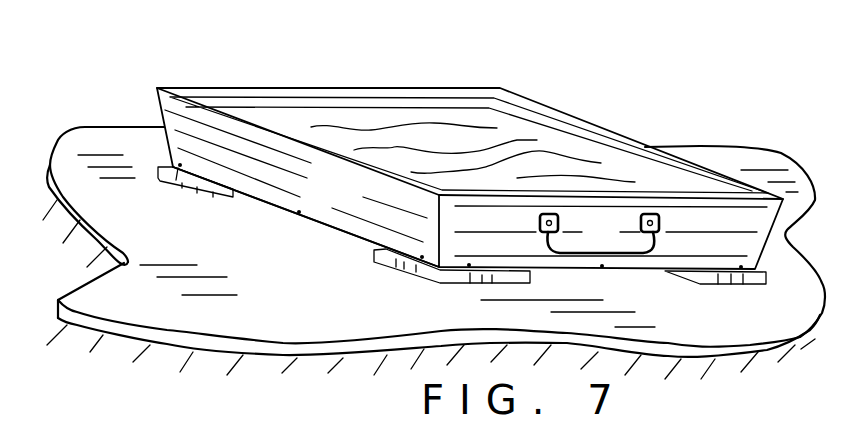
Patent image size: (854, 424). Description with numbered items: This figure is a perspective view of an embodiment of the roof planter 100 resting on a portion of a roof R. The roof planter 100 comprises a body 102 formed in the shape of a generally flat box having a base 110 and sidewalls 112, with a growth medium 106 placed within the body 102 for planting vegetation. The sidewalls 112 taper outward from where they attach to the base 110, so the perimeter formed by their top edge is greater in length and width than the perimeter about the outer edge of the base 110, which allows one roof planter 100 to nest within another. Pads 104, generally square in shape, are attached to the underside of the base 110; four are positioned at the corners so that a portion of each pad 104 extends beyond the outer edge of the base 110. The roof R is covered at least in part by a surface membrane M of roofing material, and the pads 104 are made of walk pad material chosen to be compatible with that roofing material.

The roof planter 100 is at (456, 224).
The body 102 is at (302, 216).
The pads 104 is at (181, 188).
The growth medium 106 is at (511, 143).
The base 110 is at (344, 250).
The sidewalls 112 is at (384, 82).
The roof R is at (106, 112).
The surface membrane M is at (80, 319).